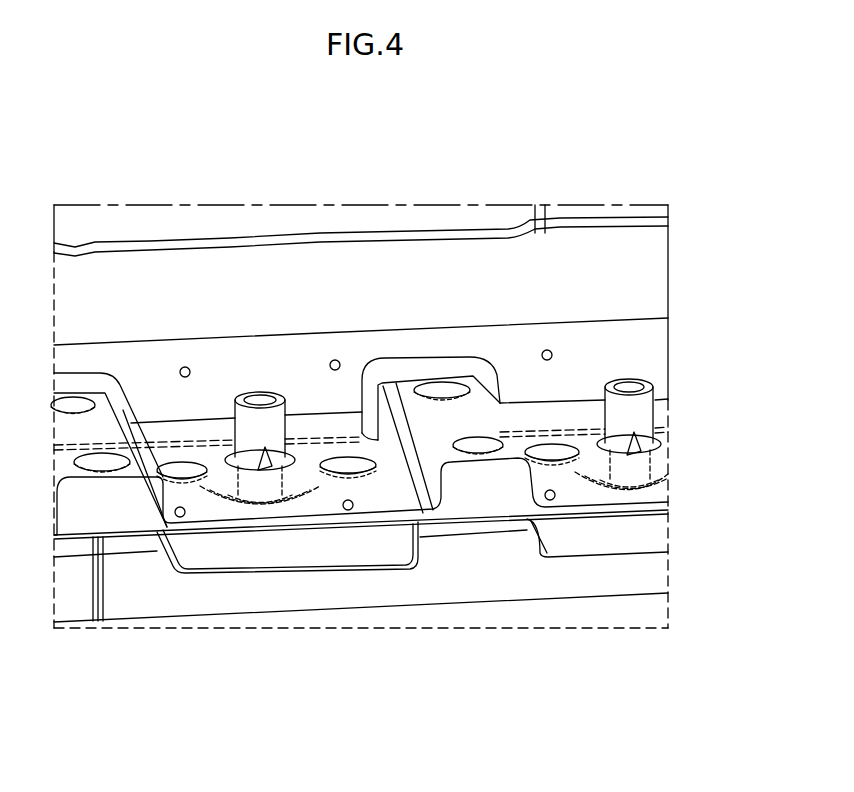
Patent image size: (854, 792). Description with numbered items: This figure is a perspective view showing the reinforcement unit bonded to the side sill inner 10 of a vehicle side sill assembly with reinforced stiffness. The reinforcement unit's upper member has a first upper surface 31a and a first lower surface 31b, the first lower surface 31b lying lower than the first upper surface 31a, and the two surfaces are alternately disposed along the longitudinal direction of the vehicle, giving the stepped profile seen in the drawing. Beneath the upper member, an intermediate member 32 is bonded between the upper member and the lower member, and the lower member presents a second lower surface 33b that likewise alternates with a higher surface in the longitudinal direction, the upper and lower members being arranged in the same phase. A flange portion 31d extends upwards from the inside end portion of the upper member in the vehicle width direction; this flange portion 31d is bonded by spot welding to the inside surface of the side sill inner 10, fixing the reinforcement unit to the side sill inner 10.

The side sill inner 10 is at (633, 277).
The first upper surface 31a is at (450, 412).
The first lower surface 31b is at (367, 503).
The flange portion 31d is at (253, 358).
The intermediate member 32 is at (480, 505).
The second lower surface 33b is at (267, 558).